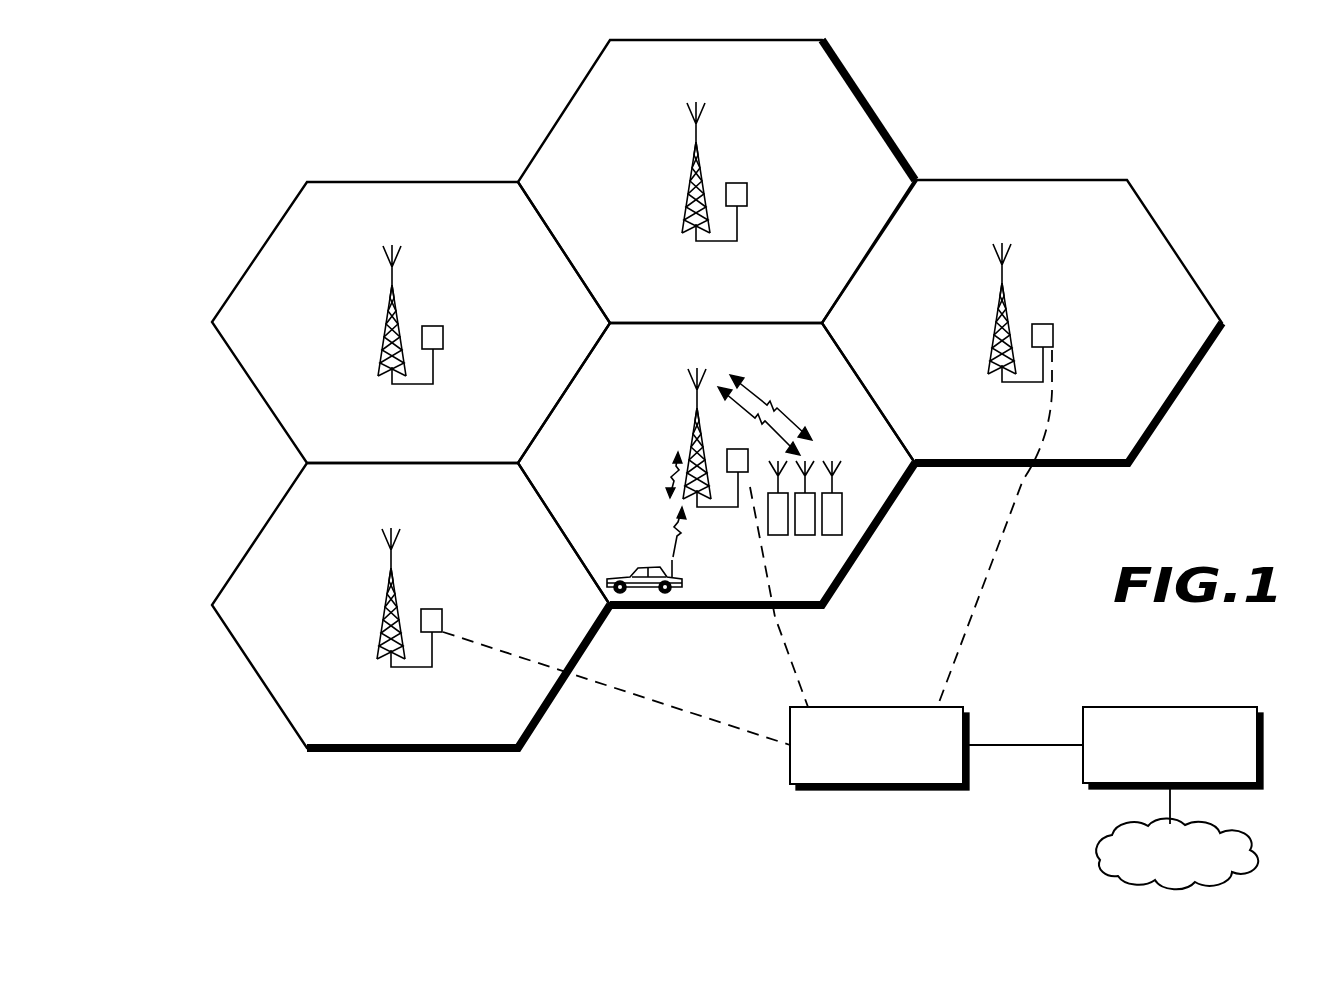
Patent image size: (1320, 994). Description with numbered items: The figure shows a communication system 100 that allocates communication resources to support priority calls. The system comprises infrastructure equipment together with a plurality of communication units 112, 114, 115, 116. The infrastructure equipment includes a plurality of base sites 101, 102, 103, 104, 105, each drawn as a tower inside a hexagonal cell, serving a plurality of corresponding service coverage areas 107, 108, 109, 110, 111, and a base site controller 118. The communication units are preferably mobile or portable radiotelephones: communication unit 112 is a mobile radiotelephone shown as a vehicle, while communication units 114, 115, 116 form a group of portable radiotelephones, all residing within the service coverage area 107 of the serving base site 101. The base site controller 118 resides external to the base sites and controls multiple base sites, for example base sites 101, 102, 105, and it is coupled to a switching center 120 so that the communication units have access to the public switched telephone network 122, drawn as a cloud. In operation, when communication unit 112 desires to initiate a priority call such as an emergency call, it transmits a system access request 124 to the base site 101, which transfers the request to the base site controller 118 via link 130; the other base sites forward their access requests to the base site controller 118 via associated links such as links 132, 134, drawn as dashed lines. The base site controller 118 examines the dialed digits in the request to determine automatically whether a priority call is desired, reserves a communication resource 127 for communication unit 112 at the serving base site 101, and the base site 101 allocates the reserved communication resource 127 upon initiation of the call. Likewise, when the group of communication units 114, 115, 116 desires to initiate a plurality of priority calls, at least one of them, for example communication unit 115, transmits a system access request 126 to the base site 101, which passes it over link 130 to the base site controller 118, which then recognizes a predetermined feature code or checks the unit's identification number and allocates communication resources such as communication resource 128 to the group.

The communication system 100 is at (1196, 108).
The base site 101 is at (683, 437).
The base site 102 is at (412, 602).
The base site 103 is at (408, 318).
The base site 104 is at (715, 175).
The base site 105 is at (1020, 317).
The service coverage area 107 is at (883, 528).
The service coverage area 108 is at (262, 533).
The service coverage area 109 is at (410, 182).
The service coverage area 110 is at (872, 108).
The service coverage area 111 is at (1022, 180).
The communication unit 112 is at (630, 578).
The communication unit 114 is at (778, 537).
The communication unit 115 is at (805, 537).
The communication unit 116 is at (843, 502).
The base site controller 118 is at (875, 707).
The switching center 120 is at (1168, 705).
The public switched telephone network 122 is at (1260, 850).
The system access request 124 is at (675, 530).
The system access request 126 is at (757, 422).
The communication resource 127 is at (672, 473).
The communication resource 128 is at (750, 387).
The link 130 is at (778, 642).
The link 132 is at (672, 707).
The link 134 is at (1003, 540).